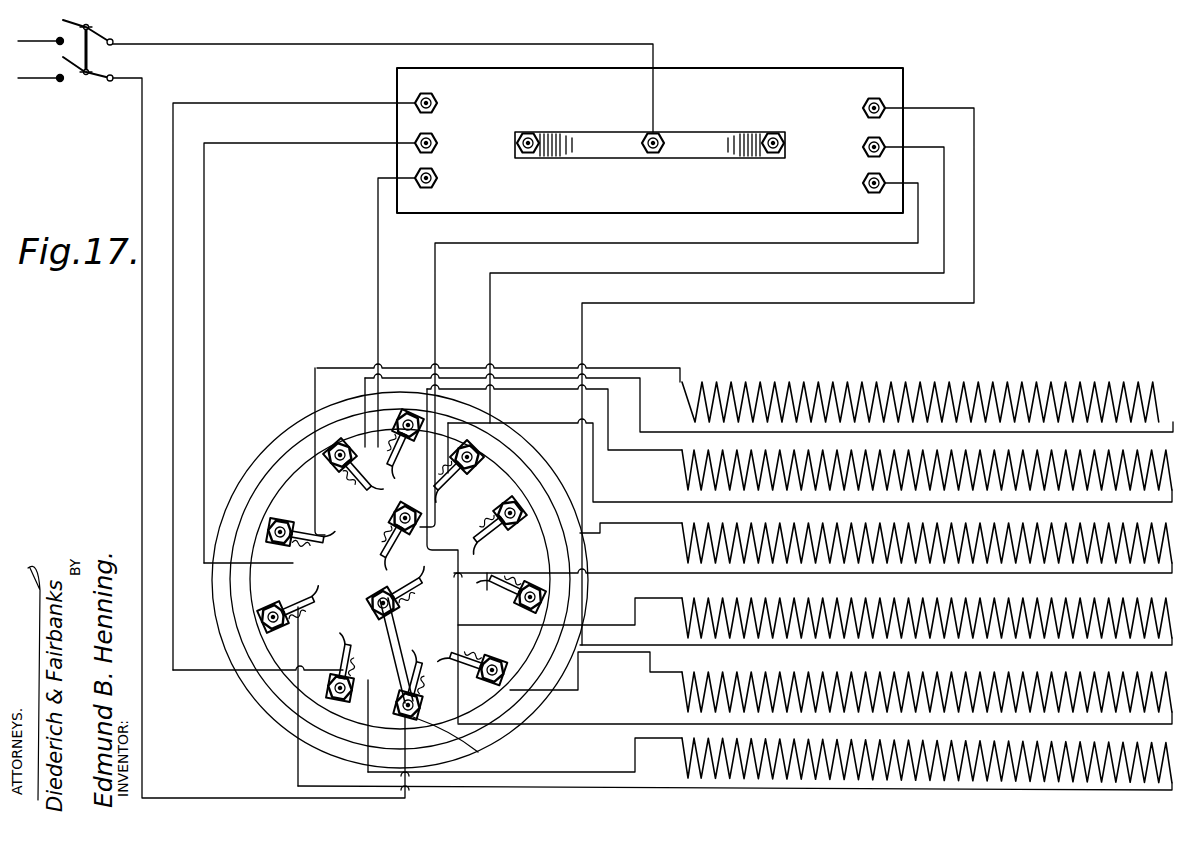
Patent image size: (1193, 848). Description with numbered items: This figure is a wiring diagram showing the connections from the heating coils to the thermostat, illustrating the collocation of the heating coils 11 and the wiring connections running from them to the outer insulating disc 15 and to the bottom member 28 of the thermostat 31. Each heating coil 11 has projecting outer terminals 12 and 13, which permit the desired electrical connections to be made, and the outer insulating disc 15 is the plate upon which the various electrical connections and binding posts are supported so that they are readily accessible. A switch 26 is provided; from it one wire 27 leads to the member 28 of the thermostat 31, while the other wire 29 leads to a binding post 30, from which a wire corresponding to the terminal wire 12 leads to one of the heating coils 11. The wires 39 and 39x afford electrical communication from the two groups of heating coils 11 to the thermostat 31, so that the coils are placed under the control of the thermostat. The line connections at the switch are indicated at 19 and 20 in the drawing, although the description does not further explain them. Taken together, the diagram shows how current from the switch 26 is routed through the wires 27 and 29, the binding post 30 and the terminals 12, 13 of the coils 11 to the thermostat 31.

The heating coil 11 is at (1150, 444).
The outer terminal 12 is at (646, 430).
The outer terminal 13 is at (664, 374).
The outer insulating plate or disc 15 is at (380, 577).
The line terminal 19 is at (41, 30).
The line terminal 20 is at (41, 90).
The switch 26 is at (96, 45).
The wire 27 is at (262, 44).
The member of thermostat 28 is at (668, 140).
The wire 29 is at (138, 383).
The binding post 30 is at (472, 752).
The thermostat 31 is at (650, 125).
The wire 39 is at (205, 185).
The wire 39x is at (918, 212).